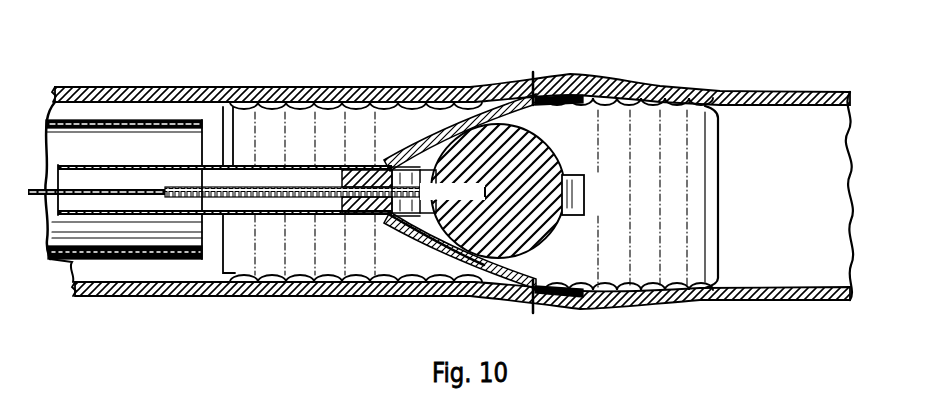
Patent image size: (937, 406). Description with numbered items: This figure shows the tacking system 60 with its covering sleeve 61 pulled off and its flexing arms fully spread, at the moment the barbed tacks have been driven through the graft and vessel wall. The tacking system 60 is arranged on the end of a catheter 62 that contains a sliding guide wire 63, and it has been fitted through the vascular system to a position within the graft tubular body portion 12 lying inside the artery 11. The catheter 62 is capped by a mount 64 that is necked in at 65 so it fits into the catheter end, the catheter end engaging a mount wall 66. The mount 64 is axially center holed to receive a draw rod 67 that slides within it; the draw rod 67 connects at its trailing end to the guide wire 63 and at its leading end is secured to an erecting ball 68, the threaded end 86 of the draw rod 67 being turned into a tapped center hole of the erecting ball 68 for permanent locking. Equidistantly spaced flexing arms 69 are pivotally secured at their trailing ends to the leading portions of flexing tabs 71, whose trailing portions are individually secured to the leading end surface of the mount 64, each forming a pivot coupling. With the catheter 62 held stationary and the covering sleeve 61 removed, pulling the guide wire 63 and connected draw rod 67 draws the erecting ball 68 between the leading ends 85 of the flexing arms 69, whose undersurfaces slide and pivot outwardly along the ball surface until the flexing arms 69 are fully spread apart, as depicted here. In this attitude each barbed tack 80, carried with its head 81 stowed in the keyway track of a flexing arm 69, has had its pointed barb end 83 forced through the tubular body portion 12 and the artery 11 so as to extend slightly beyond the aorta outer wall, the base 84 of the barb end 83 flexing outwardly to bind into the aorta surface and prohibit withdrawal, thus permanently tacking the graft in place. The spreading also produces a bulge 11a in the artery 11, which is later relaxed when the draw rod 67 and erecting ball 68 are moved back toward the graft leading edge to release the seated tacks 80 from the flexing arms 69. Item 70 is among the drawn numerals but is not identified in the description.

The artery 11 is at (245, 88).
The bulge 11a is at (608, 80).
The tubular body portion 12 is at (318, 250).
The tacking system 60 is at (44, 105).
The covering sleeve 61 is at (124, 118).
The catheter 62 is at (102, 214).
The guide wire 63 is at (40, 190).
The mount 64 is at (384, 214).
The necked in portion 65 is at (320, 280).
The mount wall 66 is at (356, 215).
The draw rod 67 is at (220, 212).
The erecting ball 68 is at (556, 228).
The flexing arms 69 is at (440, 143).
The connector end face 70 is at (396, 163).
The flexing tabs 71 is at (368, 168).
The barbed tack 80 is at (538, 51).
The head 81 is at (548, 104).
The pointed barb end 83 is at (537, 74).
The base 84 is at (532, 78).
The leading ends 85 is at (572, 78).
The threaded end 86 is at (585, 166).